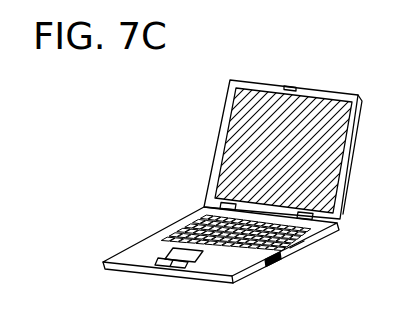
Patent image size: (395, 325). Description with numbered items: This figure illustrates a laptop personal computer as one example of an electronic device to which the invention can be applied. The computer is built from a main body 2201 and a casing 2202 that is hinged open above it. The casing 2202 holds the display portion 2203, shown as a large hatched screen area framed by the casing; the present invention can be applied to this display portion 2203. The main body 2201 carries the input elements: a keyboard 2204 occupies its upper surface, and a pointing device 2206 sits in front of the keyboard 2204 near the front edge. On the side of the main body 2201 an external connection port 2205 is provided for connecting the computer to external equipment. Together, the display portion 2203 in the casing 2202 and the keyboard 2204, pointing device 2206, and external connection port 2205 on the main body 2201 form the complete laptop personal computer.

The main body 2201 is at (146, 258).
The casing 2202 is at (229, 111).
The display portion 2203 is at (233, 156).
The keyboard 2204 is at (298, 244).
The external connection port 2205 is at (277, 262).
The pointing device 2206 is at (190, 259).